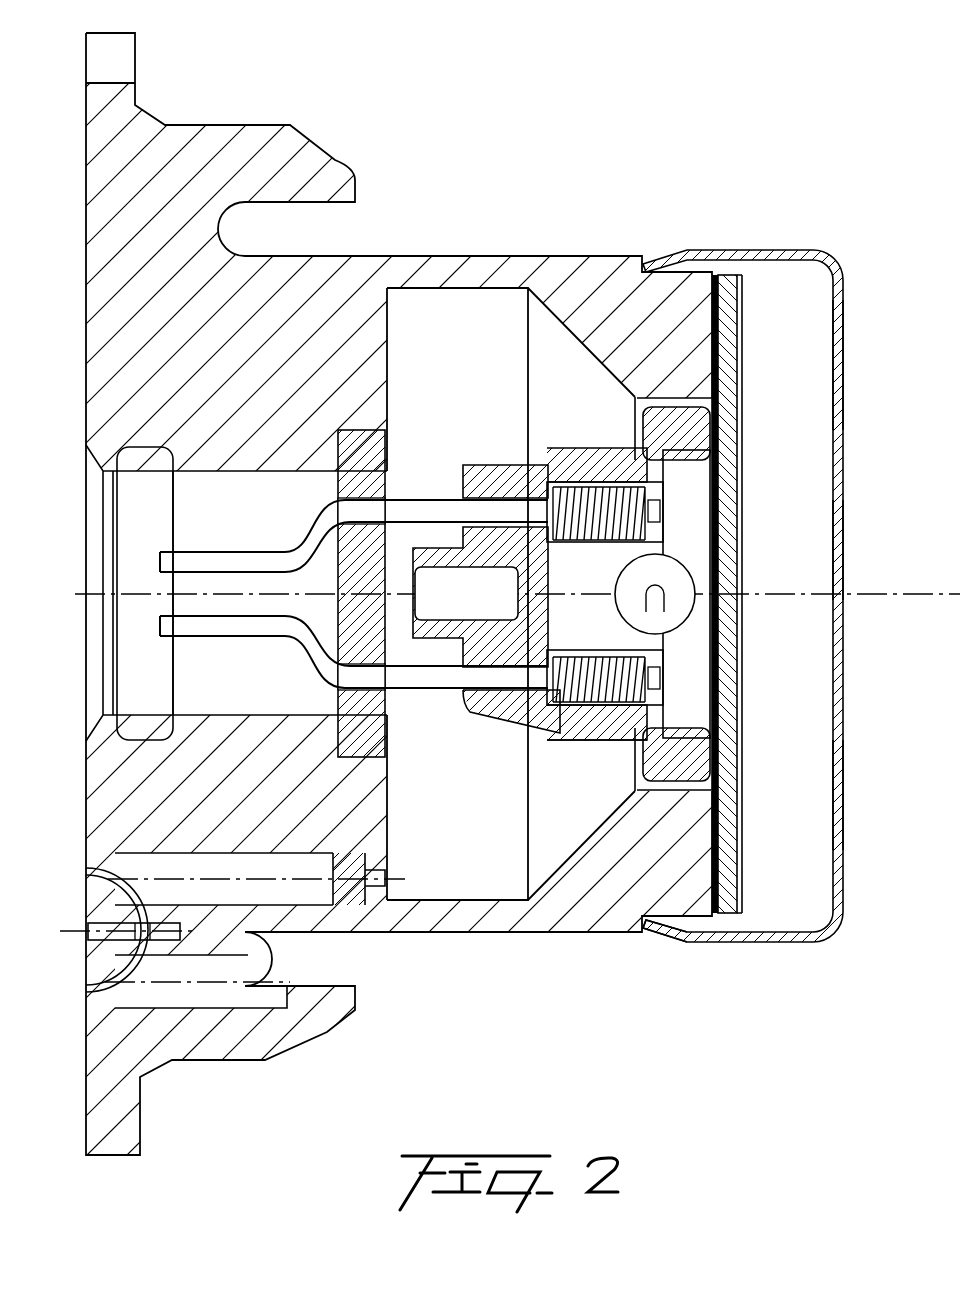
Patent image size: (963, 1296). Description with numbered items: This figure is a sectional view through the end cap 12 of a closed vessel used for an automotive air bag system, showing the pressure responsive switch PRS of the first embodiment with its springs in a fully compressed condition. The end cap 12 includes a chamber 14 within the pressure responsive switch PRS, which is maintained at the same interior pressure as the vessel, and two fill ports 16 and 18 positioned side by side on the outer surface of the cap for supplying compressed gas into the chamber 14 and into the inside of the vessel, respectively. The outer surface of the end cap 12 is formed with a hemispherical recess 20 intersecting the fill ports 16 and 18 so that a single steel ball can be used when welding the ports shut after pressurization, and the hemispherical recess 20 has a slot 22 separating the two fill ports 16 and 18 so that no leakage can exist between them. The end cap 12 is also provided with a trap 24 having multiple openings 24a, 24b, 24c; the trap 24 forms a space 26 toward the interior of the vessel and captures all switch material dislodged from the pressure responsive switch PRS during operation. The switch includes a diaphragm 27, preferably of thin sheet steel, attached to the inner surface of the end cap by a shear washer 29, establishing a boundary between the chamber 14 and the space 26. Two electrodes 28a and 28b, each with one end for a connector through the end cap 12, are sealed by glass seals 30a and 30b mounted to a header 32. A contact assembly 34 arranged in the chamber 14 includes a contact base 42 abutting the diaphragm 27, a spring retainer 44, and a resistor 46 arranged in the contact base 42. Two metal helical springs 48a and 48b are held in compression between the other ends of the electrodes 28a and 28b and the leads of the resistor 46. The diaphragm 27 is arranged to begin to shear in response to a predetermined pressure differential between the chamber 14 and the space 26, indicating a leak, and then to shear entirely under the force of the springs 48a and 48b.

The end cap 12 is at (265, 108).
The pressure responsive switch PRS is at (428, 98).
The chamber 14 is at (466, 872).
The fill port 16 is at (305, 890).
The fill port 18 is at (207, 993).
The hemispherical recess 20 is at (123, 963).
The slot 22 is at (98, 918).
The trap 24 is at (828, 272).
The opening 24a is at (847, 414).
The opening 24b is at (848, 586).
The opening 24c is at (849, 767).
The space 26 is at (803, 882).
The diaphragm 27 is at (660, 400).
The electrode 28a is at (160, 560).
The electrode 28b is at (160, 628).
The shear washer 29 is at (723, 267).
The glass seal 30a is at (338, 495).
The glass seal 30b is at (338, 707).
The header 32 is at (338, 707).
The contact assembly 34 is at (557, 742).
The contact base 42 is at (652, 392).
The spring retainer 44 is at (506, 468).
The resistor 46 is at (618, 556).
The helical spring 48a is at (570, 510).
The helical spring 48b is at (578, 686).